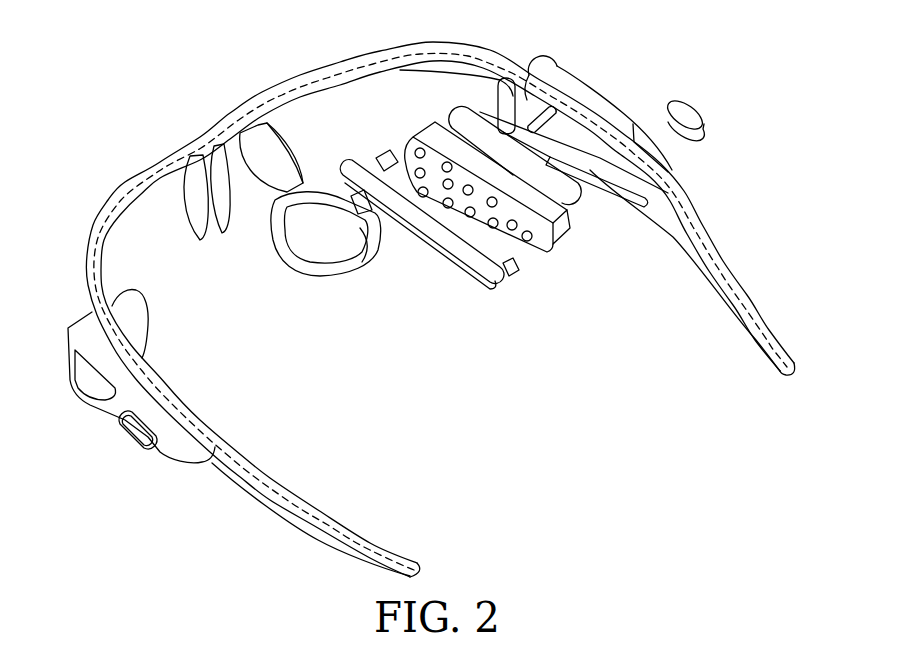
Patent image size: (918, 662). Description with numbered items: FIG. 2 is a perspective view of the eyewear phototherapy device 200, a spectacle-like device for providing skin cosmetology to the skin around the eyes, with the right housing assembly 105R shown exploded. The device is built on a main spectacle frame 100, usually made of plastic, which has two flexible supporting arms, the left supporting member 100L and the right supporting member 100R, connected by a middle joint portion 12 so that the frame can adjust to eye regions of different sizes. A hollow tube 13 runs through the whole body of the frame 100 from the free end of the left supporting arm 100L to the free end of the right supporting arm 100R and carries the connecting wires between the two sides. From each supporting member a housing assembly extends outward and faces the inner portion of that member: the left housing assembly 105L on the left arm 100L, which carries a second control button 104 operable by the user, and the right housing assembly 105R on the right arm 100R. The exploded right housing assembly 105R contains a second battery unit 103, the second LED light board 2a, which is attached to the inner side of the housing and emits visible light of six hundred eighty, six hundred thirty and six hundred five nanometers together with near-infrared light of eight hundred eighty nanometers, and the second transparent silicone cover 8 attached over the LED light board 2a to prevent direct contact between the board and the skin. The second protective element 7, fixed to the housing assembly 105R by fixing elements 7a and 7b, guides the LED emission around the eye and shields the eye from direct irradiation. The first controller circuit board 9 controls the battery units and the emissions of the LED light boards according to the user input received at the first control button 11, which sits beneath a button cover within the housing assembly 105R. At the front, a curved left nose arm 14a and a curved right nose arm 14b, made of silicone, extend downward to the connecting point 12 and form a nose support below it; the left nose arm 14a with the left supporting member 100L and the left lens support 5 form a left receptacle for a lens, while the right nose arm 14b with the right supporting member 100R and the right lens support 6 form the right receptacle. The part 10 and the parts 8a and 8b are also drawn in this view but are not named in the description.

The eyewear phototherapy device 200 is at (413, 310).
The middle joint portion 12 is at (440, 309).
The hollow tube 13 is at (437, 312).
The main spectacle frame 100 is at (449, 99).
The left supporting member 100L is at (366, 520).
The right supporting member 100R is at (736, 272).
The right housing assembly 105R is at (493, 52).
The left housing assembly 105L is at (114, 376).
The cover 10 is at (614, 96).
The first control button 11 is at (715, 106).
The second battery unit 103 is at (659, 182).
The second control button 104 is at (100, 448).
The first controller circuit board 9 is at (459, 103).
The second LED light board 2a is at (517, 207).
The second transparent silicone cover 8 is at (438, 245).
The plate tab 8a is at (538, 278).
The plate tab 8b is at (403, 131).
The second protective element 7 is at (326, 256).
The fixing element 7a is at (407, 247).
The fixing element 7b is at (398, 282).
The right lens support 6 is at (301, 153).
The left lens support 5 is at (229, 224).
The curved left nose arm 14a is at (160, 211).
The curved right nose arm 14b is at (295, 150).